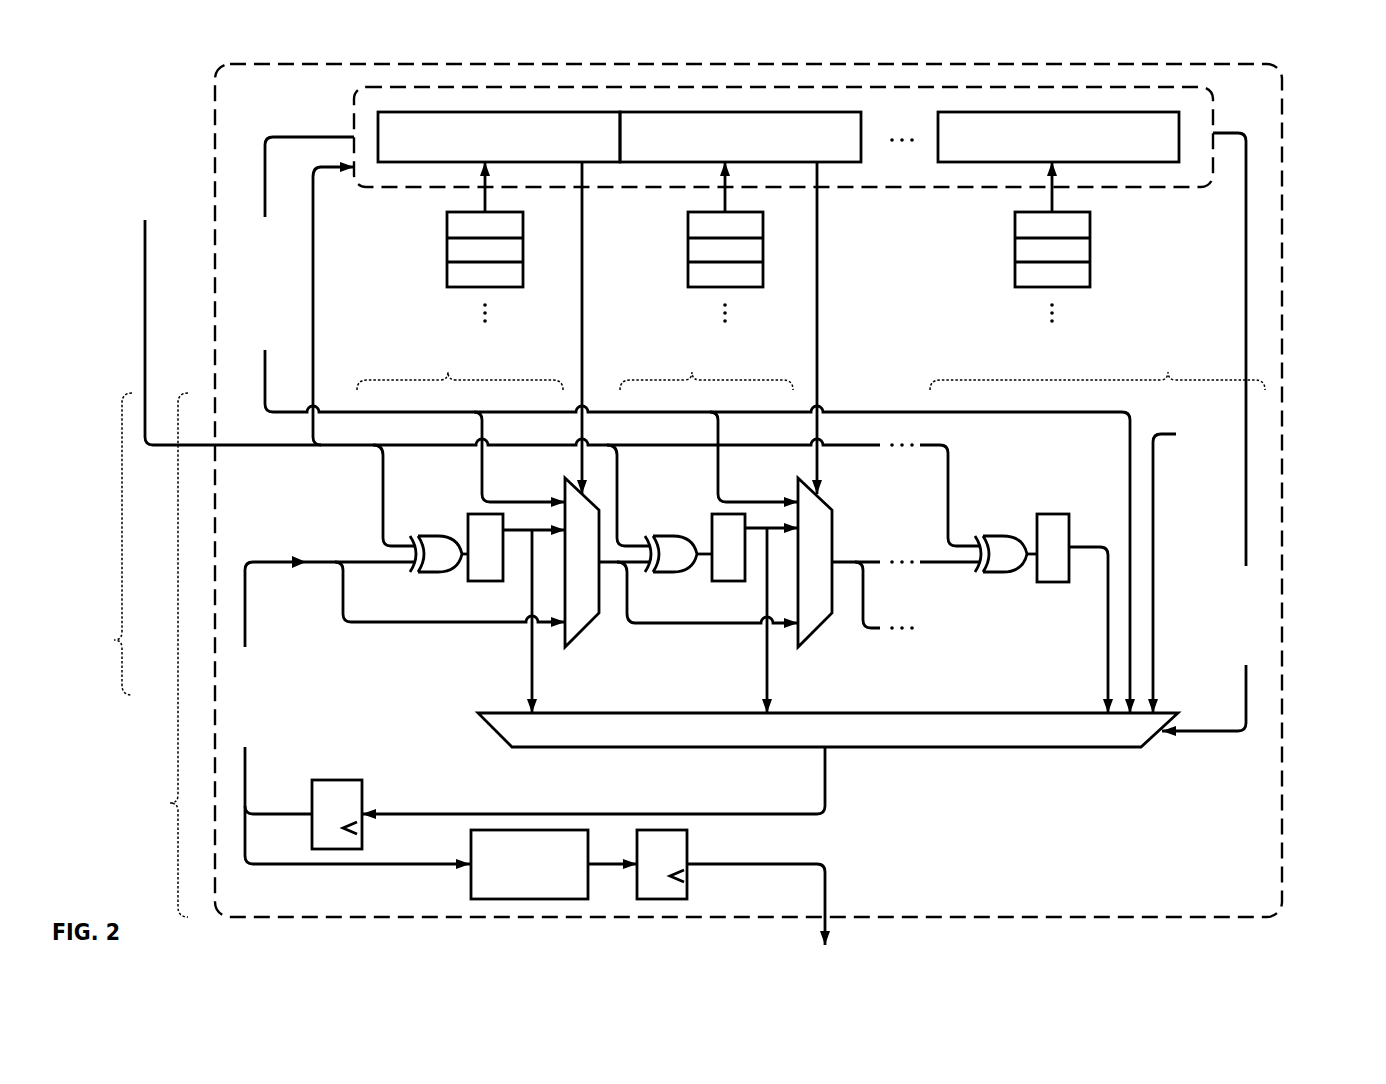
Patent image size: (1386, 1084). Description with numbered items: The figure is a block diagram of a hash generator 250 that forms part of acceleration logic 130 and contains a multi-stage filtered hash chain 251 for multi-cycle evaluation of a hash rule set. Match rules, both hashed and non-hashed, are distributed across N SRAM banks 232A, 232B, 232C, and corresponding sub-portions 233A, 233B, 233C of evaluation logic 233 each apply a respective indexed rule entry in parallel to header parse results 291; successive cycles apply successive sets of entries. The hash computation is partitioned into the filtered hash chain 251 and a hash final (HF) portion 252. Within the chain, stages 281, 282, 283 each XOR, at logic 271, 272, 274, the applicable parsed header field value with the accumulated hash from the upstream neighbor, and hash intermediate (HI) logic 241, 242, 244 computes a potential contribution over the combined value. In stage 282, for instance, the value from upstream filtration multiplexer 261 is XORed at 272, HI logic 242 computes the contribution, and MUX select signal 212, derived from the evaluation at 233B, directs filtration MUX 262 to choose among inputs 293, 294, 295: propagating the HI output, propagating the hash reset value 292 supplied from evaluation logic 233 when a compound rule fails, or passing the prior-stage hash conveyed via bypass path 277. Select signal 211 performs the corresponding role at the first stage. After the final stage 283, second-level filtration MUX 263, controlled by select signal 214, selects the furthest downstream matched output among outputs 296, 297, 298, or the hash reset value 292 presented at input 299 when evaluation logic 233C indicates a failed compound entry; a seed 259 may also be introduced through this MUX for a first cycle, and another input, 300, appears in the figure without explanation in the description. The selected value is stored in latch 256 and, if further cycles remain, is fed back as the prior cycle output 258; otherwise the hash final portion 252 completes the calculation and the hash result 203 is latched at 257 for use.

The acceleration logic 130 is at (1300, 106).
The evaluation logic 233 is at (1112, 190).
The evaluation logic sub-portion 233A is at (523, 150).
The evaluation logic sub-portion 233B is at (762, 150).
The evaluation logic sub-portion 233C is at (1081, 150).
The SRAM bank 232A is at (441, 268).
The SRAM bank 232B is at (682, 268).
The SRAM bank 232C is at (1008, 268).
The MUX select signal 211 is at (586, 222).
The MUX select signal 212 is at (821, 222).
The select signal 214 is at (1246, 312).
The initial stage 281 is at (460, 362).
The next stage 282 is at (706, 362).
The final stage 283 is at (1097, 362).
The header parse results 291 is at (165, 217).
The hash reset value 292 is at (286, 344).
The seed 259 is at (1219, 461).
The XOR logic 271 is at (436, 540).
The XOR logic 272 is at (670, 545).
The XOR logic 274 is at (1004, 566).
The hash intermediate (HI) logic 241 is at (468, 578).
The hash intermediate (HI) logic 242 is at (712, 578).
The hash intermediate (HI) logic 244 is at (1045, 514).
The filtration multiplexer 261 is at (565, 490).
The filtration multiplexer 262 is at (798, 490).
The bypass path 277 is at (673, 625).
The filtration MUX input 294 is at (832, 511).
The filtration MUX input 293 is at (835, 535).
The filtration MUX input 295 is at (821, 630).
The prior cycle output 258 is at (335, 744).
The filtered hash chain output 296 is at (525, 710).
The filtered hash chain output 297 is at (760, 710).
The filtered hash chain output 298 is at (1100, 710).
The second-level filtration MUX 263 is at (843, 743).
The multiplexer select input 300 is at (1153, 730).
The second-level MUX input 299 is at (1131, 732).
The latch 256 is at (362, 792).
The hash final (HF) portion 252 is at (566, 880).
The latch 257 is at (688, 855).
The hash result 203 is at (832, 882).
The filtered hash chain 251 is at (101, 544).
The hash generator 250 is at (156, 655).